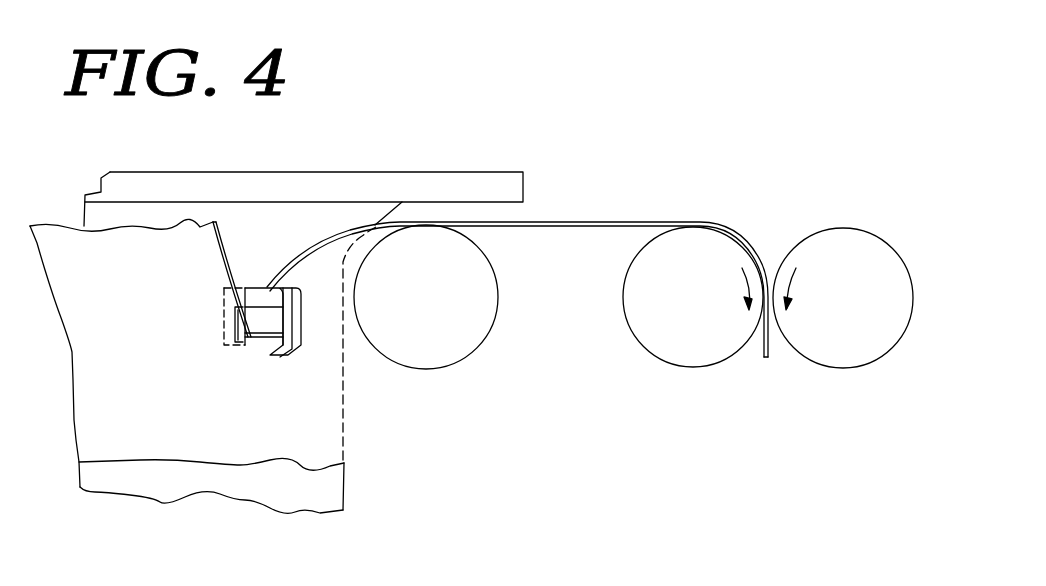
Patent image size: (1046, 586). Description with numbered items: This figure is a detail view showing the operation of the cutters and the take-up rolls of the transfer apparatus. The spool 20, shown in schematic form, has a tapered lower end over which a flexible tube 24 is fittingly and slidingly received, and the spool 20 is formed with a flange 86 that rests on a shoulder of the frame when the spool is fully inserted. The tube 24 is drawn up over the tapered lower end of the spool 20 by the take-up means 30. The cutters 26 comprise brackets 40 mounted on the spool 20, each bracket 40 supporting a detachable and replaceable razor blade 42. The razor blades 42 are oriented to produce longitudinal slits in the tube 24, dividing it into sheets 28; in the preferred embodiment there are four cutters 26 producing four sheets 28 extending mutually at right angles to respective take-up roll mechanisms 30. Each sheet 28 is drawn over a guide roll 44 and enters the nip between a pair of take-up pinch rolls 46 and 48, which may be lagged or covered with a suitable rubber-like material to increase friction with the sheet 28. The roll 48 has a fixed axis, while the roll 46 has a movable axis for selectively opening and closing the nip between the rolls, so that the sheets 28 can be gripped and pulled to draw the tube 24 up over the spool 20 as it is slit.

The spool 20 is at (280, 231).
The flexible tube 24 is at (226, 440).
The cutters 26 is at (209, 311).
The sheets 28 is at (585, 222).
The take-up roll mechanism 30 is at (704, 171).
The bracket 40 is at (303, 302).
The razor blade 42 is at (257, 342).
The guide roll 44 is at (448, 311).
The take-up pinch roll 46 is at (716, 311).
The take-up pinch roll 48 is at (866, 311).
The flange 86 is at (523, 188).